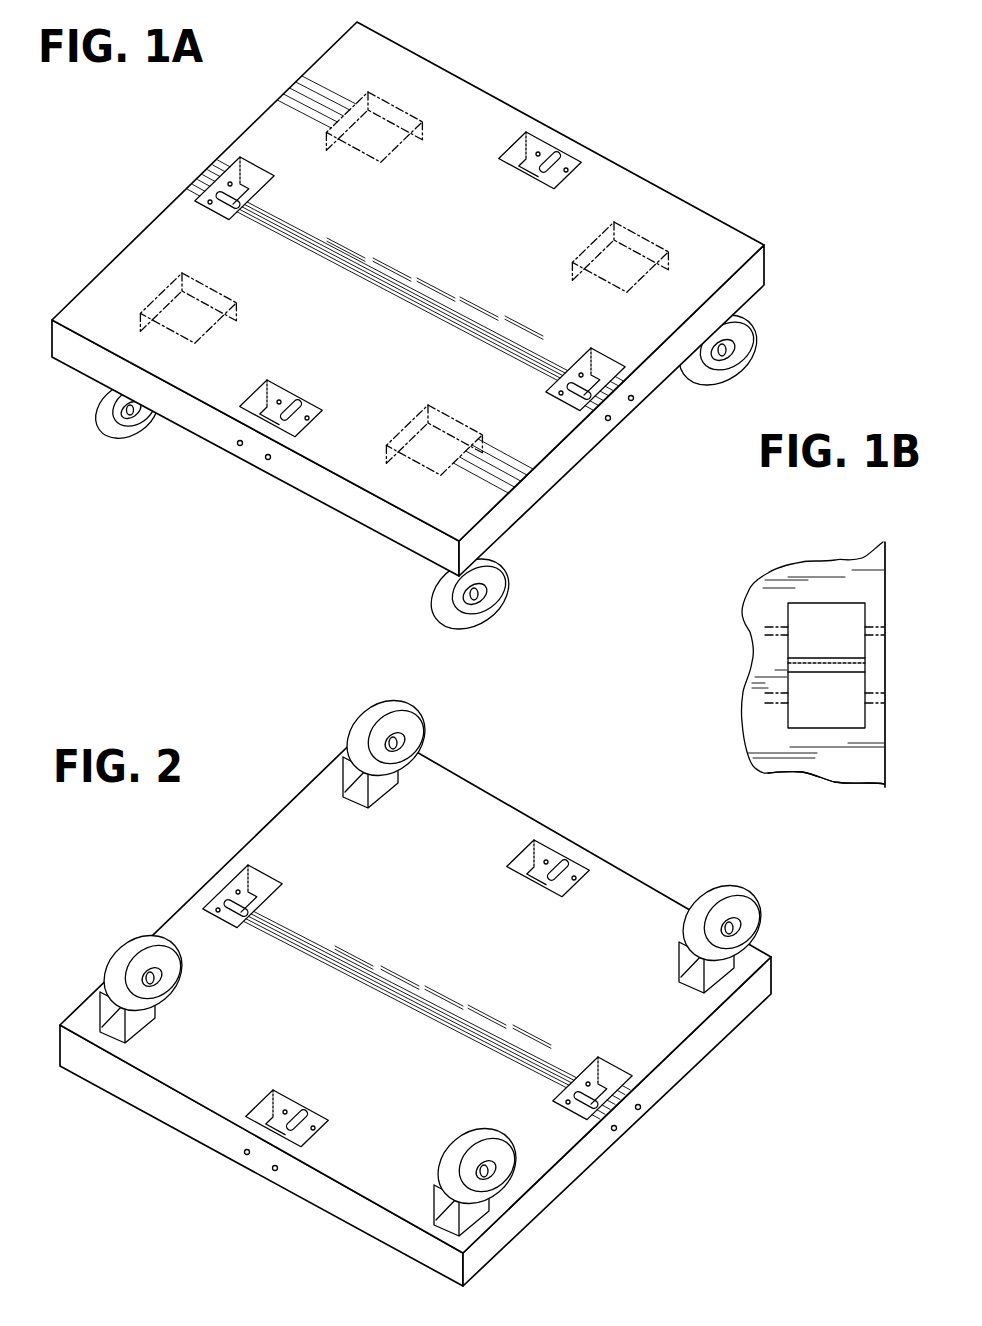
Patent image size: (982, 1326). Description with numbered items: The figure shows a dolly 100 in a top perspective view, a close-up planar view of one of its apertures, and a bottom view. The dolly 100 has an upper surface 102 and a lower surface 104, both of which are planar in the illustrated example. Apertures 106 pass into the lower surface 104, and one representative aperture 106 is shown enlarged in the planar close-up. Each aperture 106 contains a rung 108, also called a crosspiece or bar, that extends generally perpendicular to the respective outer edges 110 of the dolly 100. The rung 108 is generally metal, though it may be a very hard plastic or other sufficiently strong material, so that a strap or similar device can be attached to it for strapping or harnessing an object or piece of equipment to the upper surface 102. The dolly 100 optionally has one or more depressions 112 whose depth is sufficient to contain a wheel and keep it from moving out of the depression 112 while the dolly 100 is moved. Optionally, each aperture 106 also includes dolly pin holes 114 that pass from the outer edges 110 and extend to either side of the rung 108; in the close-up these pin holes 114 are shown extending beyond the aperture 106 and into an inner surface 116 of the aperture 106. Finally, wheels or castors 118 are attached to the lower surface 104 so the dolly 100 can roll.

In FIG. 1A, the dolly 100 is at (706, 77).
In FIG. 2, the dolly 100 is at (270, 710).
In FIG. 1A, the upper surface 102 is at (408, 281).
In FIG. 2, the lower surface 104 is at (415, 989).
In FIG. 1A, the aperture 106 is at (547, 141).
In FIG. 1B, the aperture 106 is at (805, 731).
In FIG. 2, the aperture 106 is at (274, 858).
In FIG. 1A, the rung 108 is at (566, 397).
In FIG. 1B, the rung 108 is at (835, 657).
In FIG. 2, the rung 108 is at (267, 898).
In FIG. 1A, the outer edge 110 is at (541, 487).
In FIG. 1B, the outer edge 110 is at (885, 598).
In FIG. 2, the outer edge 110 is at (498, 800).
In FIG. 1A, the depression 112 is at (426, 291).
In FIG. 1A, the dolly pin hole 114 is at (562, 391).
In FIG. 1B, the dolly pin hole 114 is at (885, 702).
In FIG. 2, the dolly pin hole 114 is at (314, 1126).
In FIG. 1B, the inner surface 116 is at (885, 776).
In FIG. 1A, the castor 118 is at (107, 423).
In FIG. 2, the castor 118 is at (415, 725).